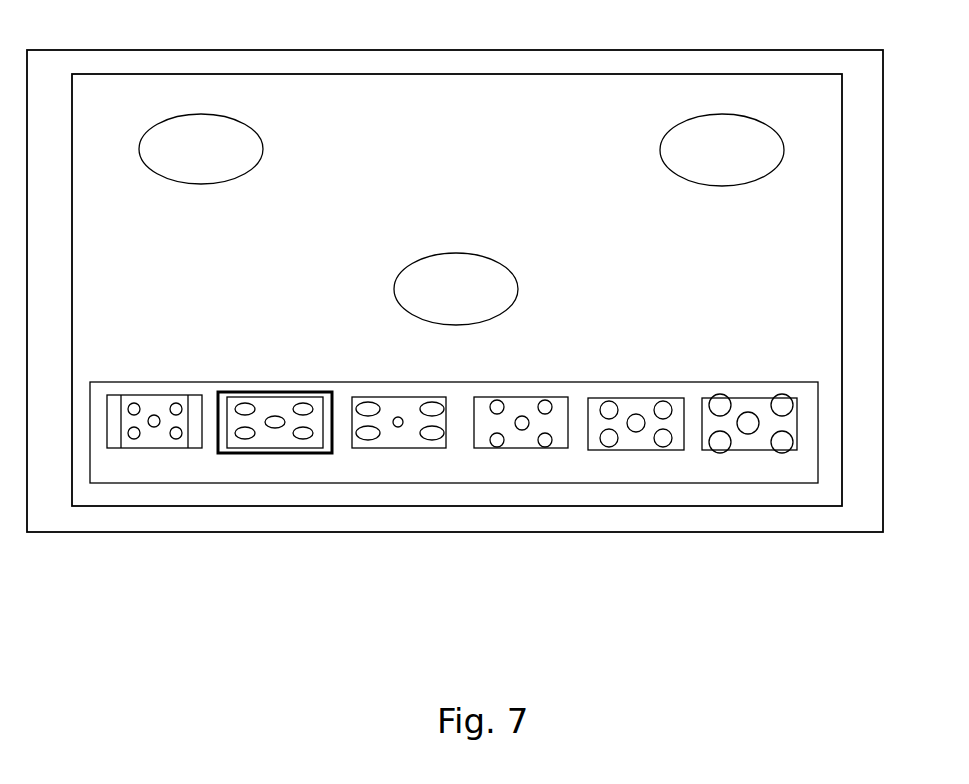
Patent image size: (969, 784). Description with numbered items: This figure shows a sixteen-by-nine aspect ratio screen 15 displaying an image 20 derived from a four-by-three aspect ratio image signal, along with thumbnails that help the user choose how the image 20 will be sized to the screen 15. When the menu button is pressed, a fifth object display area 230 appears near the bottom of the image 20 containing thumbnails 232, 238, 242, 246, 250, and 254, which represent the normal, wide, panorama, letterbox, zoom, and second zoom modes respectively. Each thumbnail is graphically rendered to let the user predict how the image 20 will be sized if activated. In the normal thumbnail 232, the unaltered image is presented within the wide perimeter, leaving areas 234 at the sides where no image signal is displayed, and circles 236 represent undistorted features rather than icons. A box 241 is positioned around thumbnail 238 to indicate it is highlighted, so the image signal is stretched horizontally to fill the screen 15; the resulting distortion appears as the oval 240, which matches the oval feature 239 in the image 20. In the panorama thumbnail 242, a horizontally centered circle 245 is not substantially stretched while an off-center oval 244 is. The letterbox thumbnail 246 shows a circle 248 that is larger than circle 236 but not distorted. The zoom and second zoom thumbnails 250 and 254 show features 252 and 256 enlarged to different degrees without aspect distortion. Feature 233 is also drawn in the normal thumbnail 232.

The screen 15 is at (545, 50).
The image 20 is at (663, 74).
The oval feature 239 is at (663, 135).
The 5th object display area 230 is at (427, 378).
The thumbnail 232 is at (150, 403).
The normal image representation 233 is at (145, 399).
The circles 236 is at (130, 426).
The areas 234 is at (193, 448).
The thumbnail 238 is at (227, 405).
The box 241 is at (297, 390).
The oval 240 is at (245, 440).
The thumbnail 242 is at (400, 397).
The oval 244 is at (365, 441).
The circle 245 is at (396, 428).
The thumbnail 246 is at (542, 397).
The circle 248 is at (495, 447).
The thumbnail 250 is at (635, 397).
The features 252 is at (610, 447).
The thumbnail 254 is at (750, 397).
The features 256 is at (720, 453).